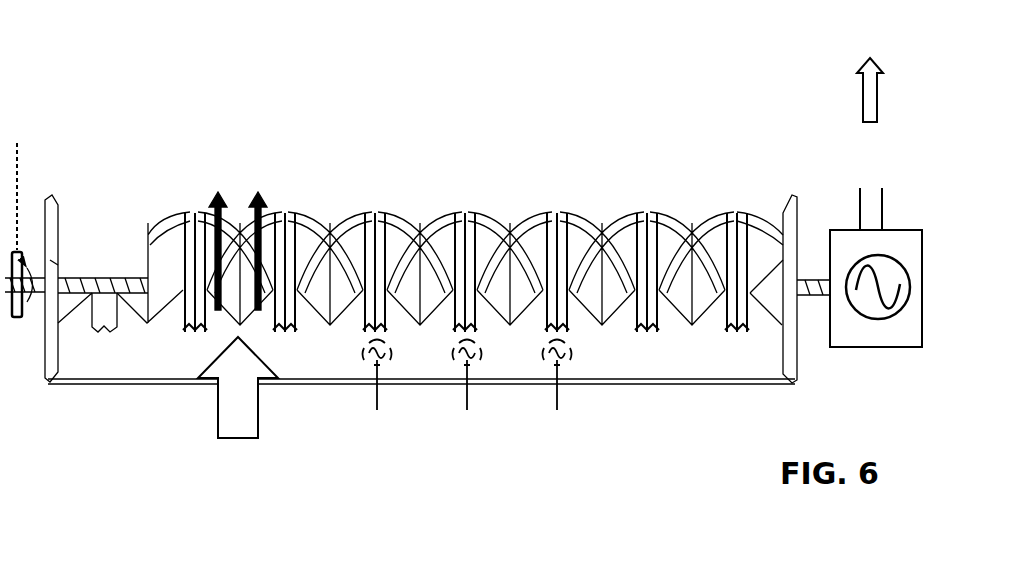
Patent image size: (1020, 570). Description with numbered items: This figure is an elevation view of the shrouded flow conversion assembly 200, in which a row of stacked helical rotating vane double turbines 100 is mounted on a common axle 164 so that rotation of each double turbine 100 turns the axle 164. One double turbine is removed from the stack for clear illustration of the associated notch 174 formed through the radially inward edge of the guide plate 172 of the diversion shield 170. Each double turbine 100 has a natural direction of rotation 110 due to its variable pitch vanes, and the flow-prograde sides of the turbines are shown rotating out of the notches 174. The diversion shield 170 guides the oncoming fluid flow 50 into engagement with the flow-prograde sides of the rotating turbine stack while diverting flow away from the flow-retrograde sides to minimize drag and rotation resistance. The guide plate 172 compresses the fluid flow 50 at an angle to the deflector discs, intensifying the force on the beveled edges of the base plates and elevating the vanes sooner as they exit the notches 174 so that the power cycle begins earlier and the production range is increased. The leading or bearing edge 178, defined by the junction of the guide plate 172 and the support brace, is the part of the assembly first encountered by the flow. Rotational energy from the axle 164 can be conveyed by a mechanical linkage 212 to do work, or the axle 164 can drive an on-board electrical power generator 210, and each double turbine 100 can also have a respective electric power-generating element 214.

The fluid flow 50 is at (255, 429).
The double turbine 100 is at (377, 190).
The natural direction of rotation 110 is at (252, 190).
The axle 164 is at (76, 278).
The diversion shield 170 is at (150, 398).
The guide plate 172 is at (157, 370).
The notch 174 is at (100, 310).
The leading or bearing edge 178 is at (652, 385).
The shrouded flow conversion assembly 200 is at (297, 125).
The on-board electrical power generator 210 is at (870, 350).
The mechanical linkage 212 is at (20, 162).
The electric power-generating element 214 is at (473, 393).